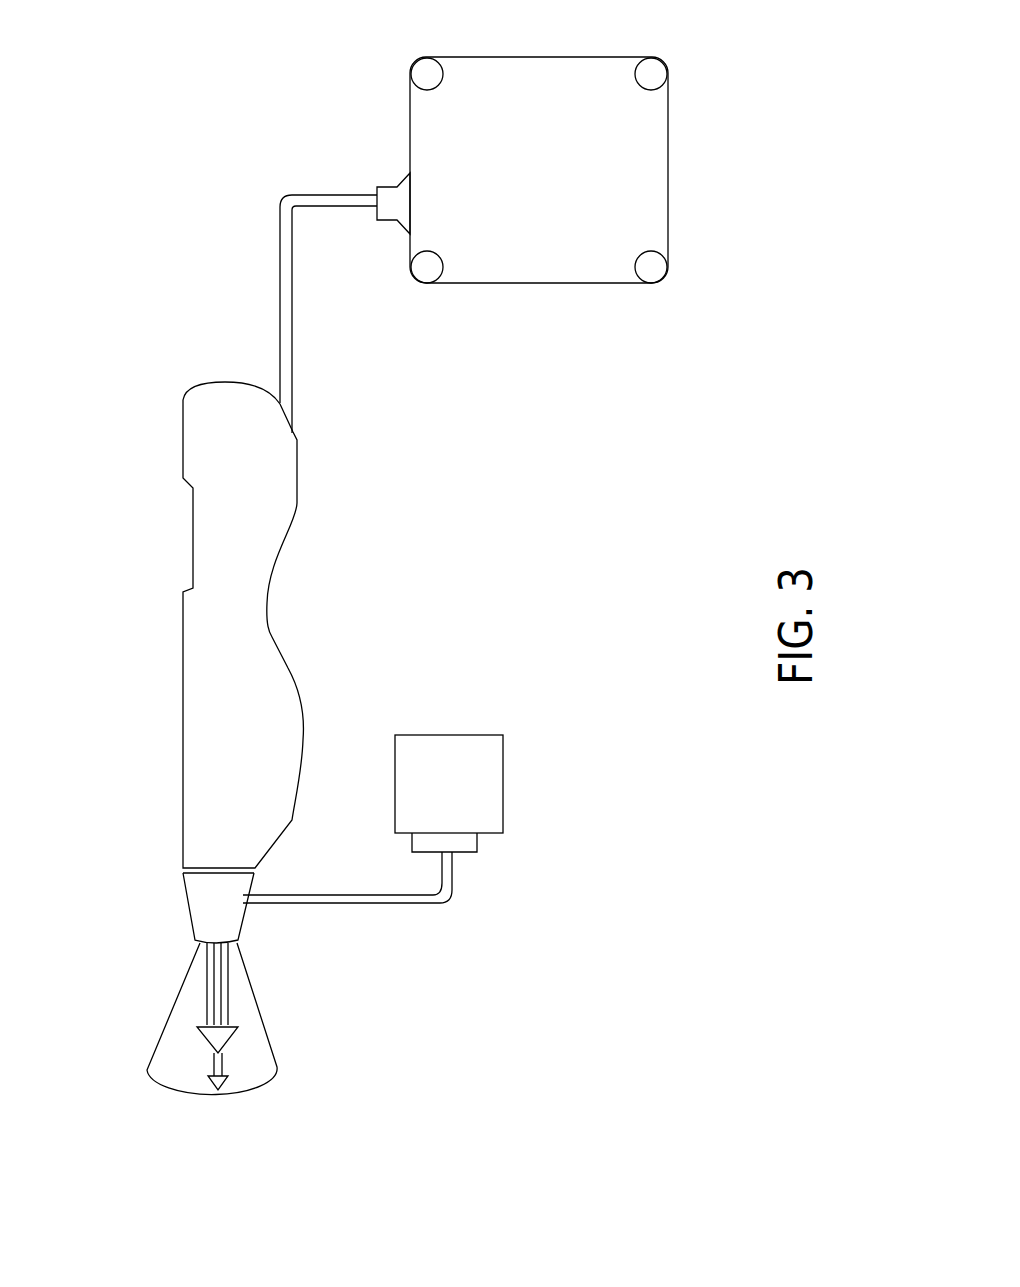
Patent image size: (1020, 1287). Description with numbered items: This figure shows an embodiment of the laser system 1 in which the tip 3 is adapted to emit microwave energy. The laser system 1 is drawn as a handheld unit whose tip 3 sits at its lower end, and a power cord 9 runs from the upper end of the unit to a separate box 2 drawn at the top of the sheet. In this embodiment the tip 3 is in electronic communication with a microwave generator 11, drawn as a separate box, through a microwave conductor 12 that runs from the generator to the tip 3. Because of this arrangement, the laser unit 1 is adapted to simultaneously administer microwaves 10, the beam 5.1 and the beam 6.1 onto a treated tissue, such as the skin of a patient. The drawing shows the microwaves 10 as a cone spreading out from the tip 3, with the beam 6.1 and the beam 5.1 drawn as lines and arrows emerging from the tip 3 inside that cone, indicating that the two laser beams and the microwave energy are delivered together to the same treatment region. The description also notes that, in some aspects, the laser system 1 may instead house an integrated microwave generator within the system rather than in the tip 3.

The laser system 1 is at (225, 727).
The supply / control unit 2 is at (498, 222).
The tip 3 is at (202, 914).
The beam from laser 5.1 is at (218, 1058).
The beam of laser 6.1 is at (210, 1005).
The power cord 9 is at (283, 313).
The microwaves 10 is at (258, 1057).
The microwave generator 11 is at (482, 760).
The microwave conductor 12 is at (450, 903).